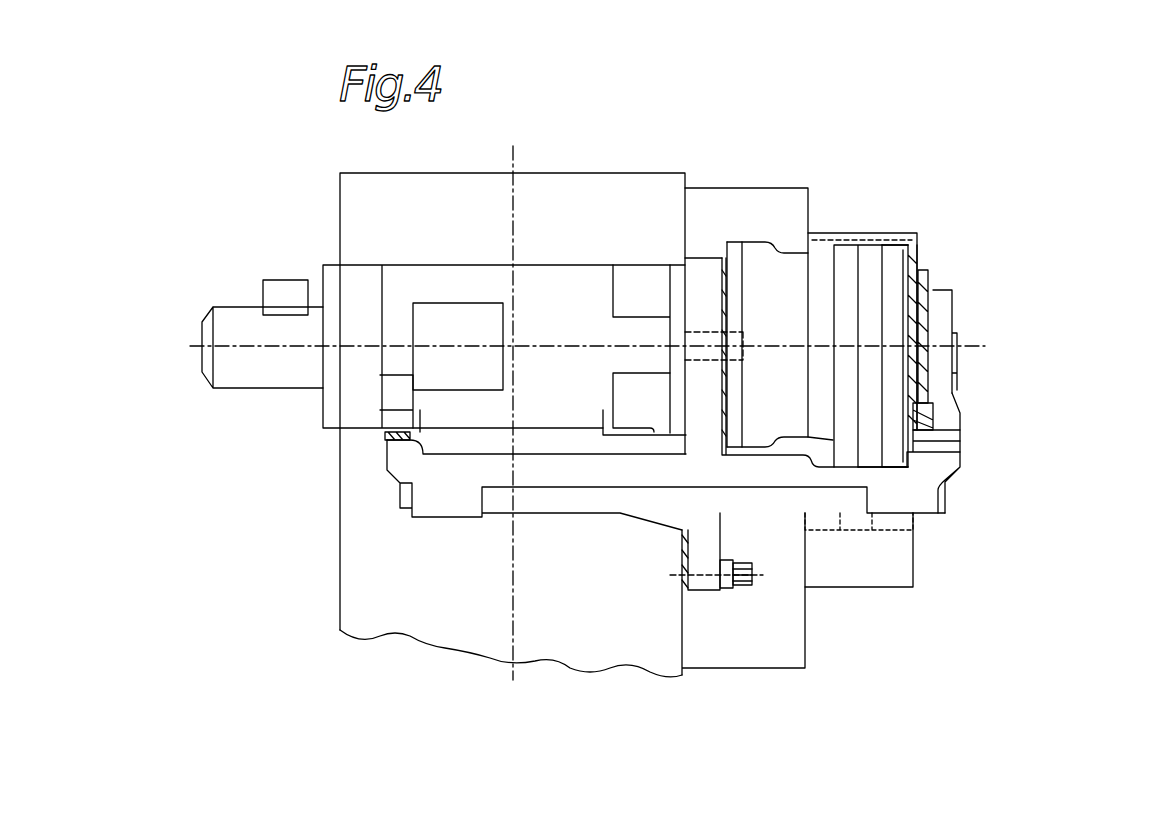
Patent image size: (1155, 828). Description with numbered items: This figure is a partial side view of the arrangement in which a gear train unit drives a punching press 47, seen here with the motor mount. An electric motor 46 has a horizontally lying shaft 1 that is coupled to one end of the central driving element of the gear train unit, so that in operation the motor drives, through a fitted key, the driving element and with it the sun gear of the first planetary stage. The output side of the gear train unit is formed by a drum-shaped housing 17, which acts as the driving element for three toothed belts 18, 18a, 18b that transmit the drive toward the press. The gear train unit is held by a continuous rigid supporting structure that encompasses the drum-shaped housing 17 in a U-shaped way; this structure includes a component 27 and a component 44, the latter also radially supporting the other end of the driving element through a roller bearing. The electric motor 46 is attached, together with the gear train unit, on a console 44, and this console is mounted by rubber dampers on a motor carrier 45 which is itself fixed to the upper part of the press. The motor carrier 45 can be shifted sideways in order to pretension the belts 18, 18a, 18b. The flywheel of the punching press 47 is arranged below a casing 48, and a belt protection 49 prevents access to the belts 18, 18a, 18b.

The shaft 1 is at (708, 332).
The drum-shaped housing 17 is at (788, 317).
The toothed belt 18 is at (895, 333).
The toothed belt 18a is at (870, 322).
The toothed belt 18b is at (845, 310).
The supporting structure component 27 is at (943, 410).
The console 44 is at (907, 477).
The motor carrier 45 is at (705, 517).
The electric motor 46 is at (573, 317).
The punching press 47 is at (572, 207).
The casing 48 is at (742, 205).
The belt protection 49 is at (857, 238).